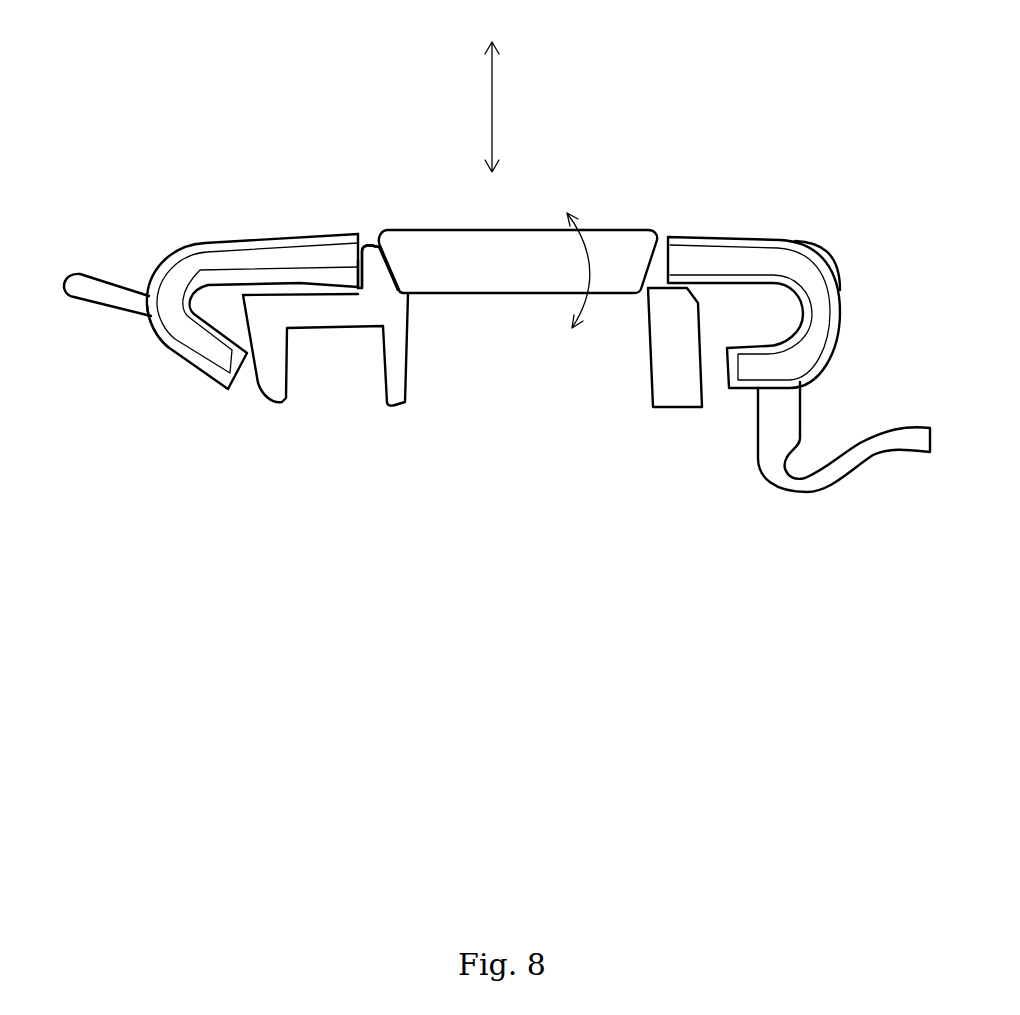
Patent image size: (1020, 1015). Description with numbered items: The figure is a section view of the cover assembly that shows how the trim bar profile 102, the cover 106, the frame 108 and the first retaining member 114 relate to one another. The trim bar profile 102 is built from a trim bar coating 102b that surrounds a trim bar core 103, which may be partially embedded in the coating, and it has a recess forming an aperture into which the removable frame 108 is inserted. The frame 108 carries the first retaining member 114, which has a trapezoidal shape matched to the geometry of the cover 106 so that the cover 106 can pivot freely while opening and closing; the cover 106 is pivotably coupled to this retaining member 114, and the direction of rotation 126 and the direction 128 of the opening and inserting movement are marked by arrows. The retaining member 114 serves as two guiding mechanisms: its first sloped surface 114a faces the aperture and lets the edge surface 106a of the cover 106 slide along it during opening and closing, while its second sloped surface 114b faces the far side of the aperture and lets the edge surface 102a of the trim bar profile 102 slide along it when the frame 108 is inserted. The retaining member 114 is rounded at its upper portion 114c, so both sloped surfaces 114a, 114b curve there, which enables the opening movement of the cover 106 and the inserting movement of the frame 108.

The trim bar profile 102 is at (489, 255).
The edge surface 102a is at (363, 232).
The trim bar coating 102b is at (157, 330).
The trim bar core 103 is at (200, 345).
The cover 106 is at (628, 238).
The edge surface 106a is at (394, 283).
The frame 108 is at (398, 391).
The first retaining member 114 is at (324, 311).
The first sloped surface 114a is at (391, 248).
The second sloped surface 114b is at (357, 271).
The upper portion 114c is at (374, 236).
The direction of rotation 126 is at (594, 314).
The direction of inserting movement 128 is at (497, 88).